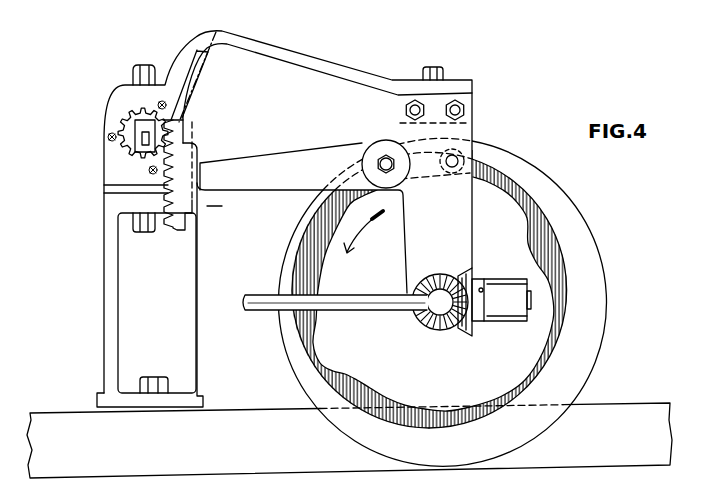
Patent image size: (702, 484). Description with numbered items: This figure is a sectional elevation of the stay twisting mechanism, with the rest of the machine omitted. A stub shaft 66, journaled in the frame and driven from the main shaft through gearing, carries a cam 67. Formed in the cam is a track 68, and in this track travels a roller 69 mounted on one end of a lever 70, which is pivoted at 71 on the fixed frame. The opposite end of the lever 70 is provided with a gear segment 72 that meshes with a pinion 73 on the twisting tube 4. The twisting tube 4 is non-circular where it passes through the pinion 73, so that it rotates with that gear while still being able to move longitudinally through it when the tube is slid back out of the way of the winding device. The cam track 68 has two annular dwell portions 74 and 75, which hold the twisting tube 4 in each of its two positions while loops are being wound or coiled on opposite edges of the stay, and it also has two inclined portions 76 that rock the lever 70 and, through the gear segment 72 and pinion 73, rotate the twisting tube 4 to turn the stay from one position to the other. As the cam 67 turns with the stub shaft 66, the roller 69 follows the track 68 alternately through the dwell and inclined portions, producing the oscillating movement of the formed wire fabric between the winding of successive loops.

The twisting tube 4 is at (138, 147).
The stub shaft 66 is at (430, 320).
The cam 67 is at (567, 212).
The cam track 68 is at (557, 325).
The roller 69 is at (472, 155).
The lever 70 is at (305, 151).
The pivot 71 is at (386, 158).
The gear segment 72 is at (187, 202).
The pinion 73 is at (128, 128).
The annular dwell portion 74 is at (438, 420).
The annular dwell portion 75 is at (307, 250).
The inclined portion 76 is at (525, 225).